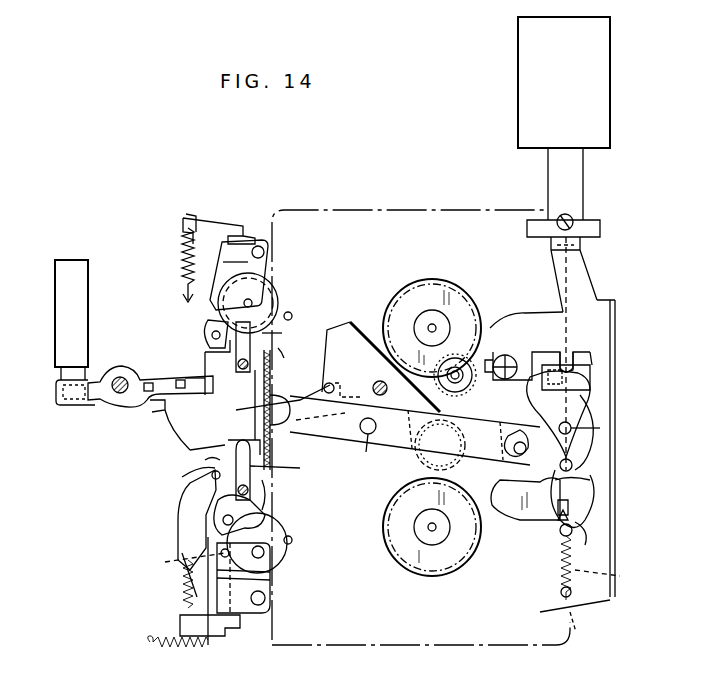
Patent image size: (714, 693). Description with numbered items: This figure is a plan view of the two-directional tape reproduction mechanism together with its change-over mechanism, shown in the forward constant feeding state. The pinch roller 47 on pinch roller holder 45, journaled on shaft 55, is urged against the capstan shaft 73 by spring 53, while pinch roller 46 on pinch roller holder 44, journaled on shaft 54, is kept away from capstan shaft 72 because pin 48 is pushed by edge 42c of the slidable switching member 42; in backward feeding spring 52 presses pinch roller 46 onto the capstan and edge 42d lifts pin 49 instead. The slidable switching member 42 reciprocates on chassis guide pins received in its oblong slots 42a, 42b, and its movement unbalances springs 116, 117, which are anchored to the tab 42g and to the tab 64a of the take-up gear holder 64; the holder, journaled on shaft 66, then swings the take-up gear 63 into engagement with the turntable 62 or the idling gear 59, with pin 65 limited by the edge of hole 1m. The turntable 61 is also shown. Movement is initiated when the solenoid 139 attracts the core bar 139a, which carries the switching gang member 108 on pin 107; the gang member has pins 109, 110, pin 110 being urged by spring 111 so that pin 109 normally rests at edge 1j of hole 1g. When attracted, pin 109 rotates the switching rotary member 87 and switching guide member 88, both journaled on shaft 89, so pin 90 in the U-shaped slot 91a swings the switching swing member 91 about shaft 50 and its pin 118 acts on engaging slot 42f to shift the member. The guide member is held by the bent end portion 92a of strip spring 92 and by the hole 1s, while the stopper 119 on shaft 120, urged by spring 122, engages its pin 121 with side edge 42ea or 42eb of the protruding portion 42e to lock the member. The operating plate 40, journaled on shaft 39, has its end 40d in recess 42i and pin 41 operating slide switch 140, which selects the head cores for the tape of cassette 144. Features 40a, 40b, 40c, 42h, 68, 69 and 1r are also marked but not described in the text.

The solenoid 139 is at (610, 78).
The core bar 139a is at (583, 178).
The pin 107 is at (572, 220).
The slide switch 140 is at (68, 260).
The pin 41 is at (58, 395).
The operating plate 40 is at (102, 405).
The shaft 39 is at (121, 394).
The lever portion 40a is at (156, 408).
The lever projection 40b is at (180, 380).
The lever projection 40c is at (146, 383).
The end of operating plate 40d is at (167, 430).
The slidable switching member 42 is at (204, 355).
The oblong slot 42a is at (291, 334).
The oblong slot 42b is at (262, 478).
The edge 42c is at (237, 262).
The edge 42d is at (180, 512).
The protruding portion 42e is at (190, 470).
The side edge 42ea is at (262, 452).
The side edge 42eb is at (300, 468).
The engaging slot 42f is at (191, 460).
The tab 42g is at (300, 358).
The lever portion 42h is at (265, 498).
The recess 42i is at (192, 378).
The pinch roller holder 44 is at (208, 225).
The pinch roller holder 45 is at (272, 614).
The pinch roller 46 is at (276, 290).
The pinch roller 47 is at (272, 578).
The pin 48 is at (210, 333).
The pin 49 is at (252, 550).
The shaft 50 is at (368, 462).
The spring 52 is at (184, 268).
The spring 53 is at (182, 592).
The shaft 54 is at (258, 240).
The shaft 55 is at (266, 597).
The idling gear 59 is at (462, 362).
The turntable 61 is at (432, 279).
The turntable 62 is at (470, 565).
The take-up gear 63 is at (460, 462).
The take-up gear holder 64 is at (350, 320).
The tab 64a is at (322, 412).
The pin 65 is at (330, 383).
The shaft 66 is at (377, 382).
The pin 68 is at (258, 375).
The pawl 69 is at (270, 515).
The capstan shaft 72 is at (288, 312).
The capstan shaft 73 is at (292, 541).
The switching rotary member 87 is at (588, 405).
The switching guide member 88 is at (592, 382).
The shaft 89 is at (600, 428).
The pin 90 is at (520, 478).
The switching swing member 91 is at (398, 448).
The U-shaped slot 91a is at (514, 430).
The strip spring 92 is at (555, 352).
The bent end portion 92a is at (573, 355).
The switching gang member 108 is at (588, 510).
The pin 109 is at (572, 462).
The pin 110 is at (574, 545).
The spring 111 is at (616, 574).
The spring 116 is at (272, 390).
The spring 117 is at (283, 405).
The pin 118 is at (190, 450).
The stopper 119 is at (180, 545).
The shaft 120 is at (180, 561).
The pin 121 is at (212, 478).
The spring 122 is at (170, 635).
The cassette 144 is at (586, 625).
The hole 1m is at (356, 395).
The hole 1s is at (598, 362).
The hole 1g is at (595, 440).
The edge 1j is at (590, 480).
The position 1r is at (590, 538).